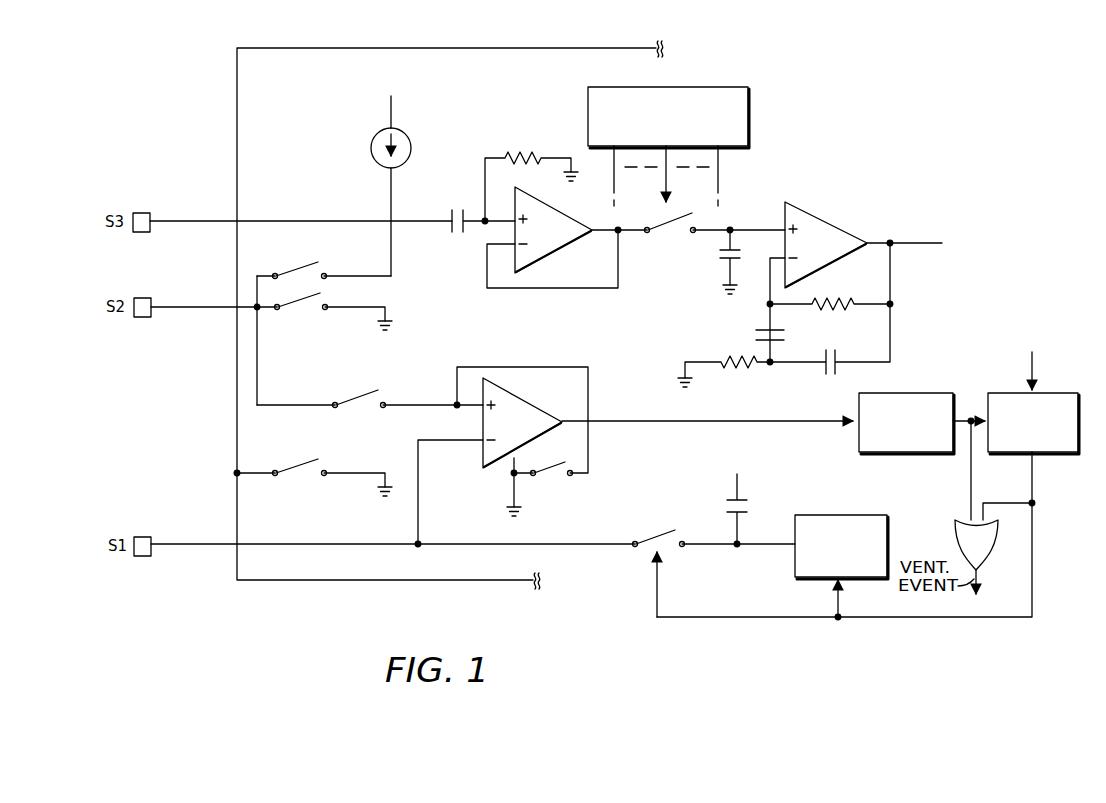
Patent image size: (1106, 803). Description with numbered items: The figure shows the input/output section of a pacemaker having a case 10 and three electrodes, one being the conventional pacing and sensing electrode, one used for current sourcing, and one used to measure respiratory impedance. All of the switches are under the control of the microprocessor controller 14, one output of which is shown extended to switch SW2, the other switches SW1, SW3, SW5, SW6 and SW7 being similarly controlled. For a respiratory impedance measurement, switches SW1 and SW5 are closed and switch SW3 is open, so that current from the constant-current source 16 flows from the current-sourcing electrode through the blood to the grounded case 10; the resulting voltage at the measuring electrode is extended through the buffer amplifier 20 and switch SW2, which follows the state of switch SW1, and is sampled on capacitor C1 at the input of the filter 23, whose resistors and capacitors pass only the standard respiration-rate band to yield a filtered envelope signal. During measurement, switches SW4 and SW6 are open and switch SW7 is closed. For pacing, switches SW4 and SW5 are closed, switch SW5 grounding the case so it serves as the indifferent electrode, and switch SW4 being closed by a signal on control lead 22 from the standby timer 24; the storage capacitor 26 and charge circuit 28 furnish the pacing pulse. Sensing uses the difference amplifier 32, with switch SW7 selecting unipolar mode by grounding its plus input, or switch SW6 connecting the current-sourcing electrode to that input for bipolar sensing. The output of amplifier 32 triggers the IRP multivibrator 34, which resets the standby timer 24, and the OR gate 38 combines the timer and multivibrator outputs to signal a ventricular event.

The case 10 is at (455, 48).
The microprocessor controller 14 is at (749, 119).
The constant-current source 16 is at (404, 128).
The buffer amplifier 20 is at (474, 251).
The control lead 22 is at (1032, 573).
The filter 23 is at (814, 219).
The standby timer 24 is at (1058, 453).
The storage capacitor 26 is at (752, 507).
The charge circuit 28 is at (795, 567).
The difference amplifier 32 is at (518, 398).
The IRP multivibrator 34 is at (938, 393).
The OR gate 38 is at (990, 557).
The switch SW1 is at (298, 268).
The switch SW2 is at (672, 217).
The switch SW3 is at (305, 293).
The switch SW4 is at (655, 531).
The switch SW5 is at (302, 459).
The switch SW6 is at (362, 391).
The switch SW7 is at (553, 465).
The capacitor C1 is at (752, 252).